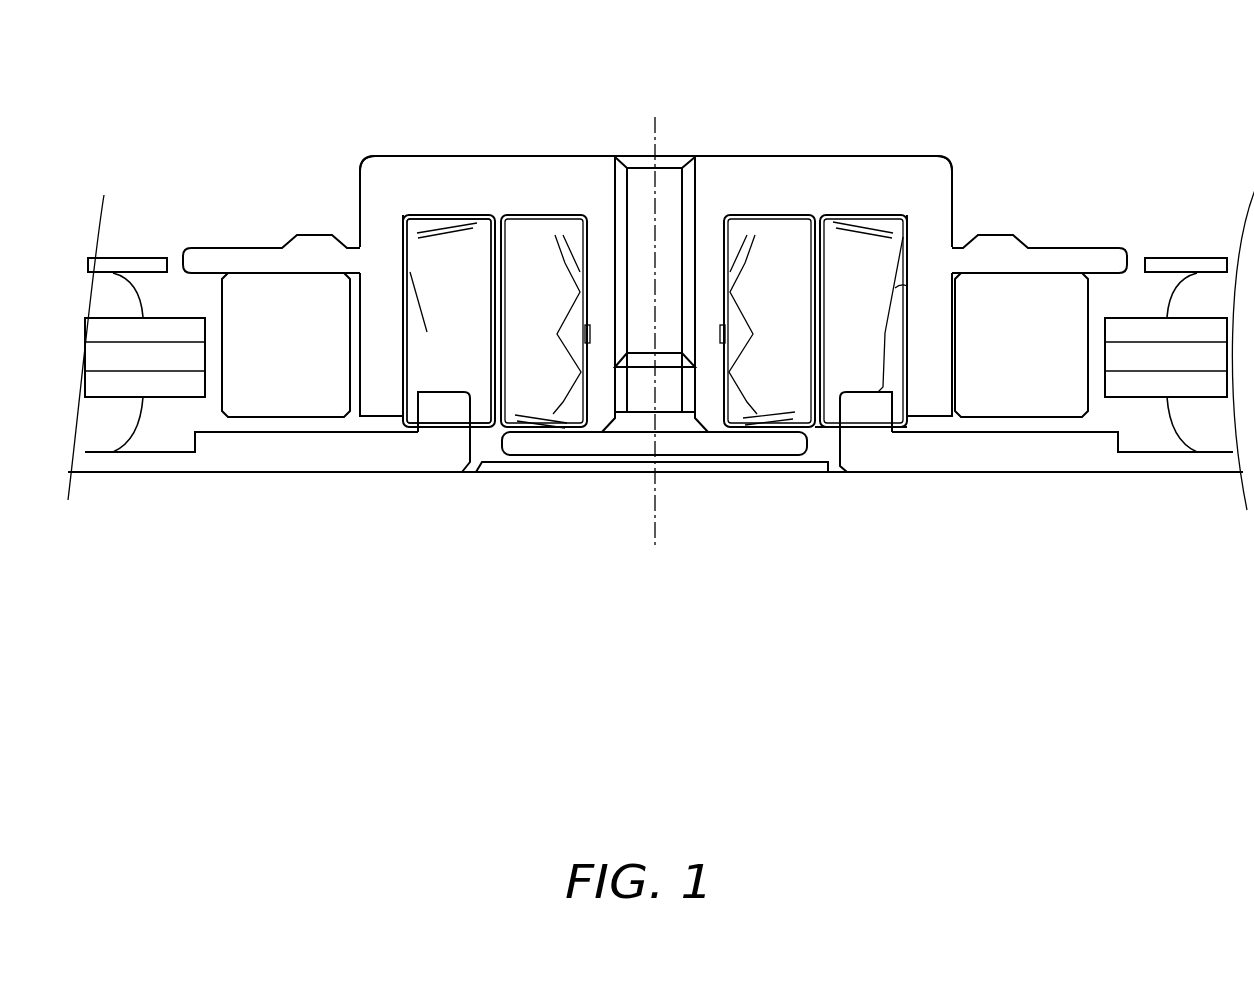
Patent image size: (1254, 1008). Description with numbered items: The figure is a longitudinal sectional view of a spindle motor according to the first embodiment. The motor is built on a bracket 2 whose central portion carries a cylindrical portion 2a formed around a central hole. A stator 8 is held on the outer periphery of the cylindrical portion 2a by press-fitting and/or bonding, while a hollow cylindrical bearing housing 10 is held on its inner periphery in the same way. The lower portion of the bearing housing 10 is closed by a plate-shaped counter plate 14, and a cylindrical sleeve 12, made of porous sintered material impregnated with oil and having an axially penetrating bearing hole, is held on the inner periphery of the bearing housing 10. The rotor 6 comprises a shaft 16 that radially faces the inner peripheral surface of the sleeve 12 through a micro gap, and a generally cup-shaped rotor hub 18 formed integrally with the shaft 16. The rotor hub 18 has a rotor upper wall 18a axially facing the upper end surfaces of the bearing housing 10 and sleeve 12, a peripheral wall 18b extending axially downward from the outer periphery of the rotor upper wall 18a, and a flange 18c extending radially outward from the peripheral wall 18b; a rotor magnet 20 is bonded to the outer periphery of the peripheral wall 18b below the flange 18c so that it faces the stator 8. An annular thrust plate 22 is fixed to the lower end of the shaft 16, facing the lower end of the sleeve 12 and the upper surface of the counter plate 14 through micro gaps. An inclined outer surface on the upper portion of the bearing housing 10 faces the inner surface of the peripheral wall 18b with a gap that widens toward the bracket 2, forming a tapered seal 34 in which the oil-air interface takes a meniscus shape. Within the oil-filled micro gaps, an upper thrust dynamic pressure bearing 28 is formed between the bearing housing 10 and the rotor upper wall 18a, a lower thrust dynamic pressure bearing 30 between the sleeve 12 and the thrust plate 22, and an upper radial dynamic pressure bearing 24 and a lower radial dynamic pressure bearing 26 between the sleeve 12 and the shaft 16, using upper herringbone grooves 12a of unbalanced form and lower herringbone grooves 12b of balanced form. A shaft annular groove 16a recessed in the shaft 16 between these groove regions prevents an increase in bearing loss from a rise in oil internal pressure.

The bracket 2 is at (1050, 452).
The cylindrical portion 2a is at (873, 412).
The rotor 6 is at (975, 148).
The stator 8 is at (142, 353).
The bearing housing 10 is at (830, 433).
The sleeve 12 is at (410, 272).
The upper herringbone grooves 12a is at (747, 267).
The lower herringbone grooves 12b is at (775, 410).
The counter plate 14 is at (577, 468).
The shaft 16 is at (596, 313).
The shaft annular groove 16a is at (722, 313).
The rotor hub 18 is at (577, 197).
The rotor upper wall 18a is at (775, 197).
The peripheral wall 18b is at (932, 273).
The flange 18c is at (990, 235).
The rotor magnet 20 is at (260, 353).
The thrust plate 22 is at (637, 444).
The upper radial dynamic pressure bearing 24 is at (543, 317).
The lower radial dynamic pressure bearing 26 is at (495, 237).
The upper thrust dynamic pressure bearing 28 is at (860, 212).
The lower thrust dynamic pressure bearing 30 is at (547, 433).
The tapered seal 34 is at (415, 286).